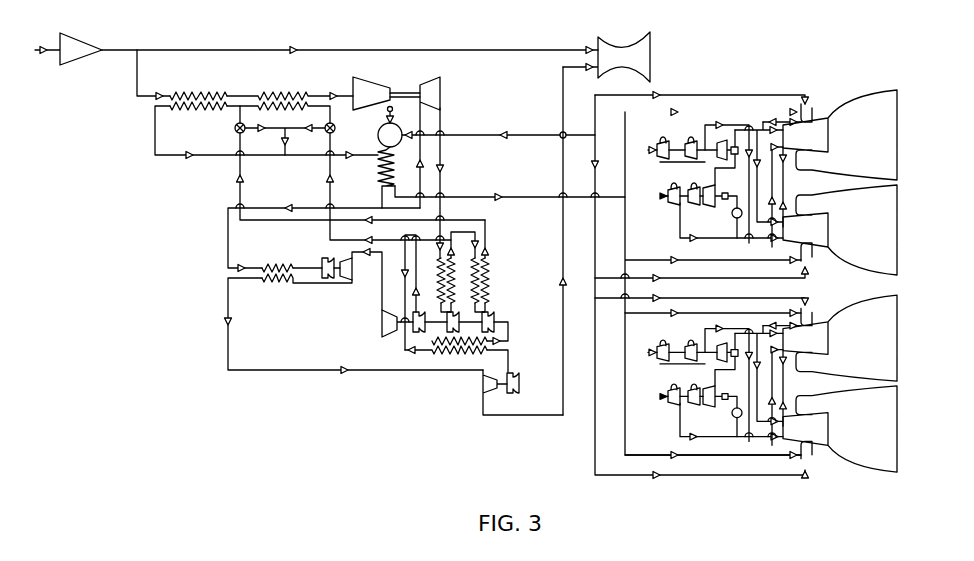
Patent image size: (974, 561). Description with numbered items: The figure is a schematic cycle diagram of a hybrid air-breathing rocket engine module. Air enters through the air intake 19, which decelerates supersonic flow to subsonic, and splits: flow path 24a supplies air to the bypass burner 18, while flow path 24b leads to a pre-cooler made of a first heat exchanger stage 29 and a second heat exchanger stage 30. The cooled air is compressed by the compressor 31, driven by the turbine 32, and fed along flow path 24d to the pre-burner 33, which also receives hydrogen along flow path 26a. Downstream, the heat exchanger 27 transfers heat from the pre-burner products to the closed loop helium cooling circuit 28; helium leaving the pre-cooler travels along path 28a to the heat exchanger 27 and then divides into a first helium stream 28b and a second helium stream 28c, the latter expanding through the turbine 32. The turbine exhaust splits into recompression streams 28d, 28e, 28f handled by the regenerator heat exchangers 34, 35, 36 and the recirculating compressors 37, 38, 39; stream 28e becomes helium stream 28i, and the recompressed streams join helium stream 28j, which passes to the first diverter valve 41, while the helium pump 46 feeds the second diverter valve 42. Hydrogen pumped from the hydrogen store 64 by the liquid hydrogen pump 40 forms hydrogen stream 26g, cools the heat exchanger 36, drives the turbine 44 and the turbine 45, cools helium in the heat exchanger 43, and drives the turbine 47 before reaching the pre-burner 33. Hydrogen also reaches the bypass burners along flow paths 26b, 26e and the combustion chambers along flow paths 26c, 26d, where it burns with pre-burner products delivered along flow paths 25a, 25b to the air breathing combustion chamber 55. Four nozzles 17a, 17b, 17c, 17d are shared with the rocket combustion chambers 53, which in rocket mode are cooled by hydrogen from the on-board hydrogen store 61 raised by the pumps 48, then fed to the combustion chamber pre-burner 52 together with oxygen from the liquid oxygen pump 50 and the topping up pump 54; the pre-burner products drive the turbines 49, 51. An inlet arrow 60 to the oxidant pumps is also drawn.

The nozzle 17a is at (862, 97).
The nozzle 17b is at (847, 270).
The nozzle 17c is at (898, 341).
The nozzle 17d is at (898, 428).
The bypass burner 18 is at (607, 36).
The air intake 19 is at (82, 36).
The flow path 24a is at (328, 47).
The flow path 24b is at (140, 76).
The flow path 24d is at (425, 96).
The flow path 25a is at (488, 195).
The flow path 25b is at (738, 123).
The flow path 26a is at (483, 132).
The flow path 26b is at (566, 101).
The flow path 26c is at (565, 140).
The flow path 26d is at (682, 93).
The flow path 26e is at (591, 322).
The hydrogen stream 26g is at (512, 356).
The heat exchanger 27 is at (398, 170).
The closed loop helium cooling circuit 28 is at (157, 172).
The path 28a is at (187, 158).
The first helium stream 28b is at (260, 207).
The second helium stream 28c is at (443, 190).
The first recompression helium stream 28d is at (487, 242).
The second recompression helium stream 28e is at (405, 236).
The third recompression helium stream 28f is at (382, 286).
The helium stream 28i is at (354, 238).
The helium stream 28j is at (238, 194).
The first heat exchanger stage 29 is at (202, 92).
The second heat exchanger stage 30 is at (290, 92).
The compressor 31 is at (375, 79).
The turbine 32 is at (428, 77).
The pre-burner 33 is at (380, 131).
The first regenerator heat exchanger 34 is at (490, 285).
The second regenerator heat exchanger 35 is at (437, 275).
The third regenerator heat exchanger 36 is at (449, 333).
The first compressor 37 is at (497, 320).
The compressor 38 is at (462, 353).
The third compressor 39 is at (418, 333).
The liquid hydrogen pump 40 is at (513, 395).
The first diverter valve 41 is at (234, 130).
The second diverter valve 42 is at (325, 133).
The heat exchanger 43 is at (275, 285).
The turbine 44 is at (385, 338).
The turbine 45 is at (349, 278).
The helium pump 46 is at (326, 258).
The turbine 47 is at (490, 394).
The pumps 48 is at (682, 168).
The turbine 49 is at (722, 140).
The liquid oxygen pump 50 is at (688, 204).
The turbine 51 is at (705, 205).
The combustion chamber pre-burner 52 is at (735, 220).
The rocket combustion chambers 53 is at (814, 118).
The topping up pump 54 is at (686, 143).
The air breathing combustion chamber 55 is at (808, 102).
The pump 60 is at (660, 198).
The on-board hydrogen store 61 is at (654, 148).
The hydrogen store 64 is at (520, 385).